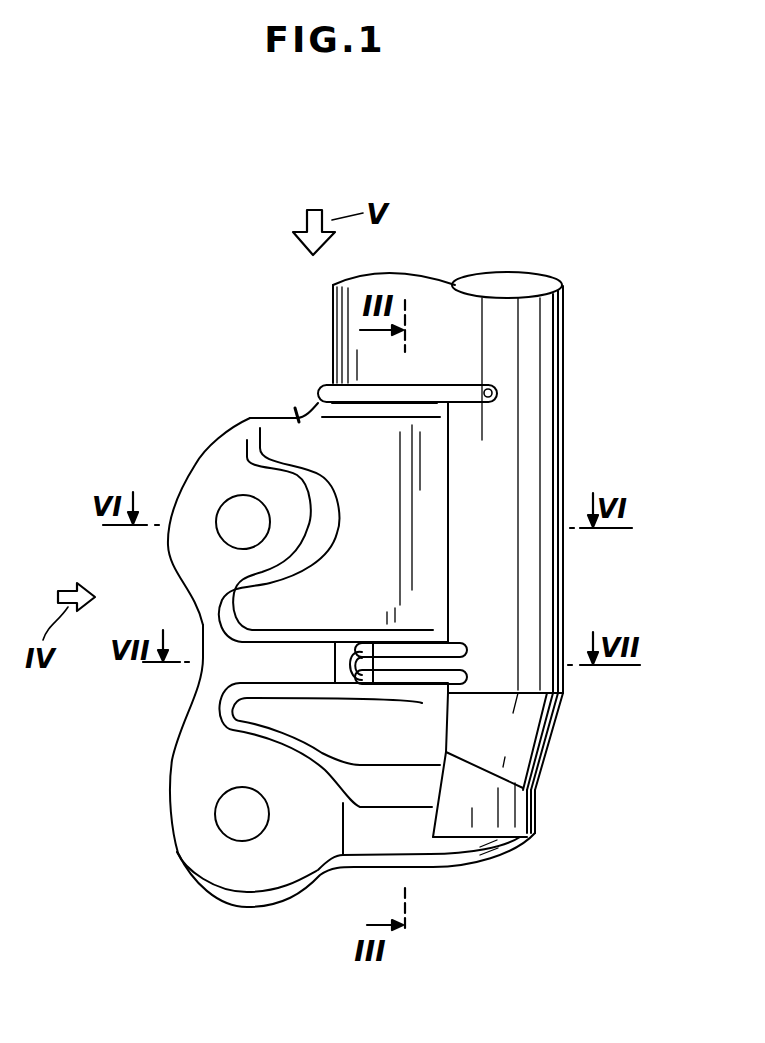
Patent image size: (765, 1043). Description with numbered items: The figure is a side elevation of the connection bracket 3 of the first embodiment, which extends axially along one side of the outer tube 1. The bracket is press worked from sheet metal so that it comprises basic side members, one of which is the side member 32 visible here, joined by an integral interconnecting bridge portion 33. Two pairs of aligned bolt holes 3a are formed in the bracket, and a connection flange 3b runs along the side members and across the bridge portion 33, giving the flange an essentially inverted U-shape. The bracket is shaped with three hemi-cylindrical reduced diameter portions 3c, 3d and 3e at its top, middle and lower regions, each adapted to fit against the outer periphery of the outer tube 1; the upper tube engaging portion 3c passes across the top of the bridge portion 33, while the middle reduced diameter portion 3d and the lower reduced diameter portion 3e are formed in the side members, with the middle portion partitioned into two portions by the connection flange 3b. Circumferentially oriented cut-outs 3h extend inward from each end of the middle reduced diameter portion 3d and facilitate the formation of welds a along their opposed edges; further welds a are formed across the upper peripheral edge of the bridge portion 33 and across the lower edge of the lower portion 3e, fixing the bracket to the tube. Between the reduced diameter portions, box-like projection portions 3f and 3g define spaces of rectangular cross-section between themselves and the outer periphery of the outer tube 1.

The outer tube 1 is at (550, 367).
The connection bracket 3 is at (250, 412).
The bolt holes 3a is at (262, 517).
The connection flange 3b is at (213, 480).
The upper tube engaging portion 3c is at (423, 413).
The middle reduced diameter portion 3d is at (455, 643).
The lower reduced diameter portion 3e is at (422, 838).
The box-like projection portion 3f is at (435, 552).
The box-like projection portion 3g is at (433, 742).
The cut-outs 3h is at (357, 652).
The second side member 32 is at (450, 483).
The bridge portion 33 is at (297, 414).
The welds a is at (500, 393).